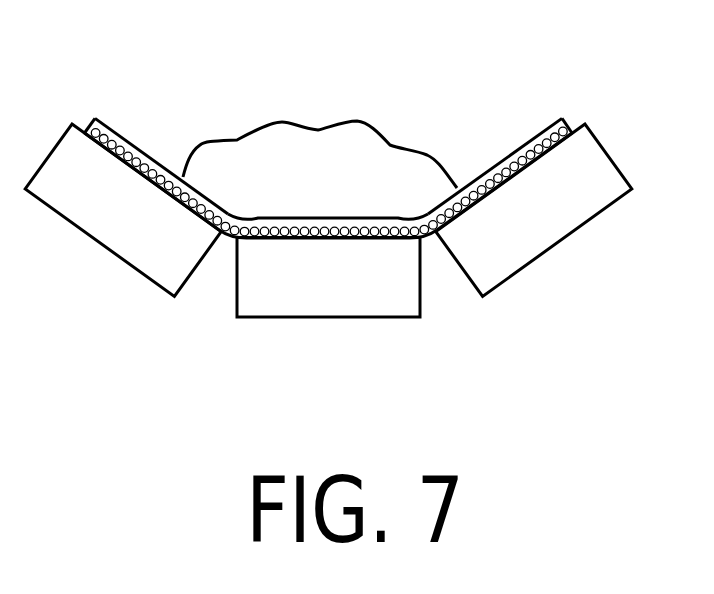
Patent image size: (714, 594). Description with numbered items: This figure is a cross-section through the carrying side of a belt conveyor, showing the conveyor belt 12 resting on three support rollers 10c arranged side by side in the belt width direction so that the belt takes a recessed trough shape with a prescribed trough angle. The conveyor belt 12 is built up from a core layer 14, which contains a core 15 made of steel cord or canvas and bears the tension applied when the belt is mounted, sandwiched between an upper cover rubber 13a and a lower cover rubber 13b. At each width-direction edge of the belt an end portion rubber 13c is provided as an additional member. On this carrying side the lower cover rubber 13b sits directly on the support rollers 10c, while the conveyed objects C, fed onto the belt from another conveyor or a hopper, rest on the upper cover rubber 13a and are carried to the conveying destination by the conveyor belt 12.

The support rollers 10c is at (123, 227).
The conveyor belt 12 is at (362, 176).
The upper cover rubber 13a is at (205, 195).
The lower cover rubber 13b is at (262, 240).
The width direction end portion rubber 13c is at (88, 131).
The core layer 14 is at (500, 163).
The core 15 is at (360, 228).
The conveyed objects C is at (291, 143).